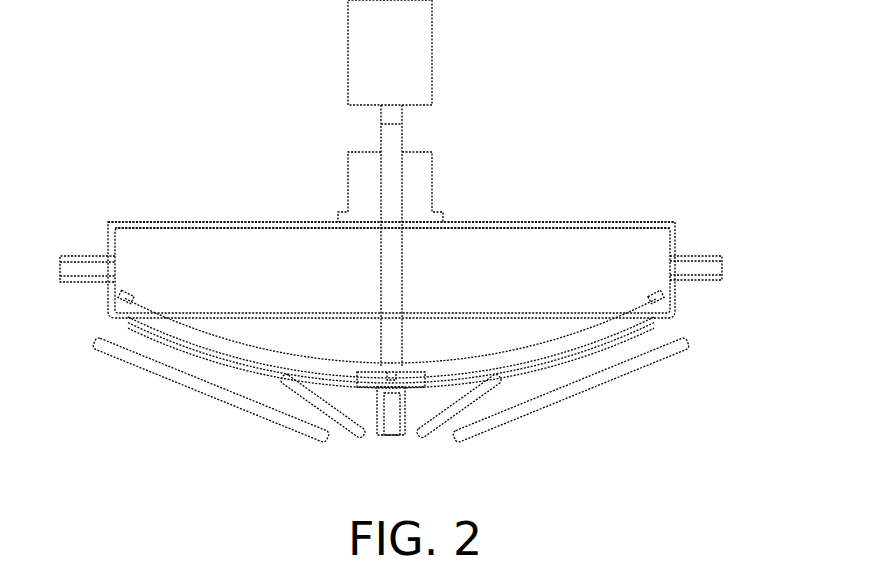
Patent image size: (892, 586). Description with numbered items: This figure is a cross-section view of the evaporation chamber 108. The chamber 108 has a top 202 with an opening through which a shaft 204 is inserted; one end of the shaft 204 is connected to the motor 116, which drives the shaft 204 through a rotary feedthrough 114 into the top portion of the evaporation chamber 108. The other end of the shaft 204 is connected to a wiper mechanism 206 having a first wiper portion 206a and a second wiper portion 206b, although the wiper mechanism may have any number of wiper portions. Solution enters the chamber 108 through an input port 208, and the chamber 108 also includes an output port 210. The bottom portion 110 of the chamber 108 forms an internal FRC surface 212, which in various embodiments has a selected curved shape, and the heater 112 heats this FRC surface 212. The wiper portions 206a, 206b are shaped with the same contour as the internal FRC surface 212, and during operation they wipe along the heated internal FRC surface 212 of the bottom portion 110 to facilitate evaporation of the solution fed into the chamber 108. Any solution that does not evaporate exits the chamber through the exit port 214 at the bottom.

The evaporation chamber 108 is at (605, 172).
The bottom portion 110 is at (125, 330).
The heater 112 is at (548, 404).
The rotary feedthrough 114 is at (348, 176).
The motor 116 is at (348, 52).
The top 202 is at (165, 222).
The shaft 204 is at (388, 292).
The wiper mechanism 206 is at (391, 306).
The first wiper portion 206a is at (258, 362).
The second wiper portion 206b is at (525, 362).
The input port 208 is at (73, 256).
The output port 210 is at (700, 256).
The internal FRC surface 212 is at (625, 325).
The exit port 214 is at (387, 444).